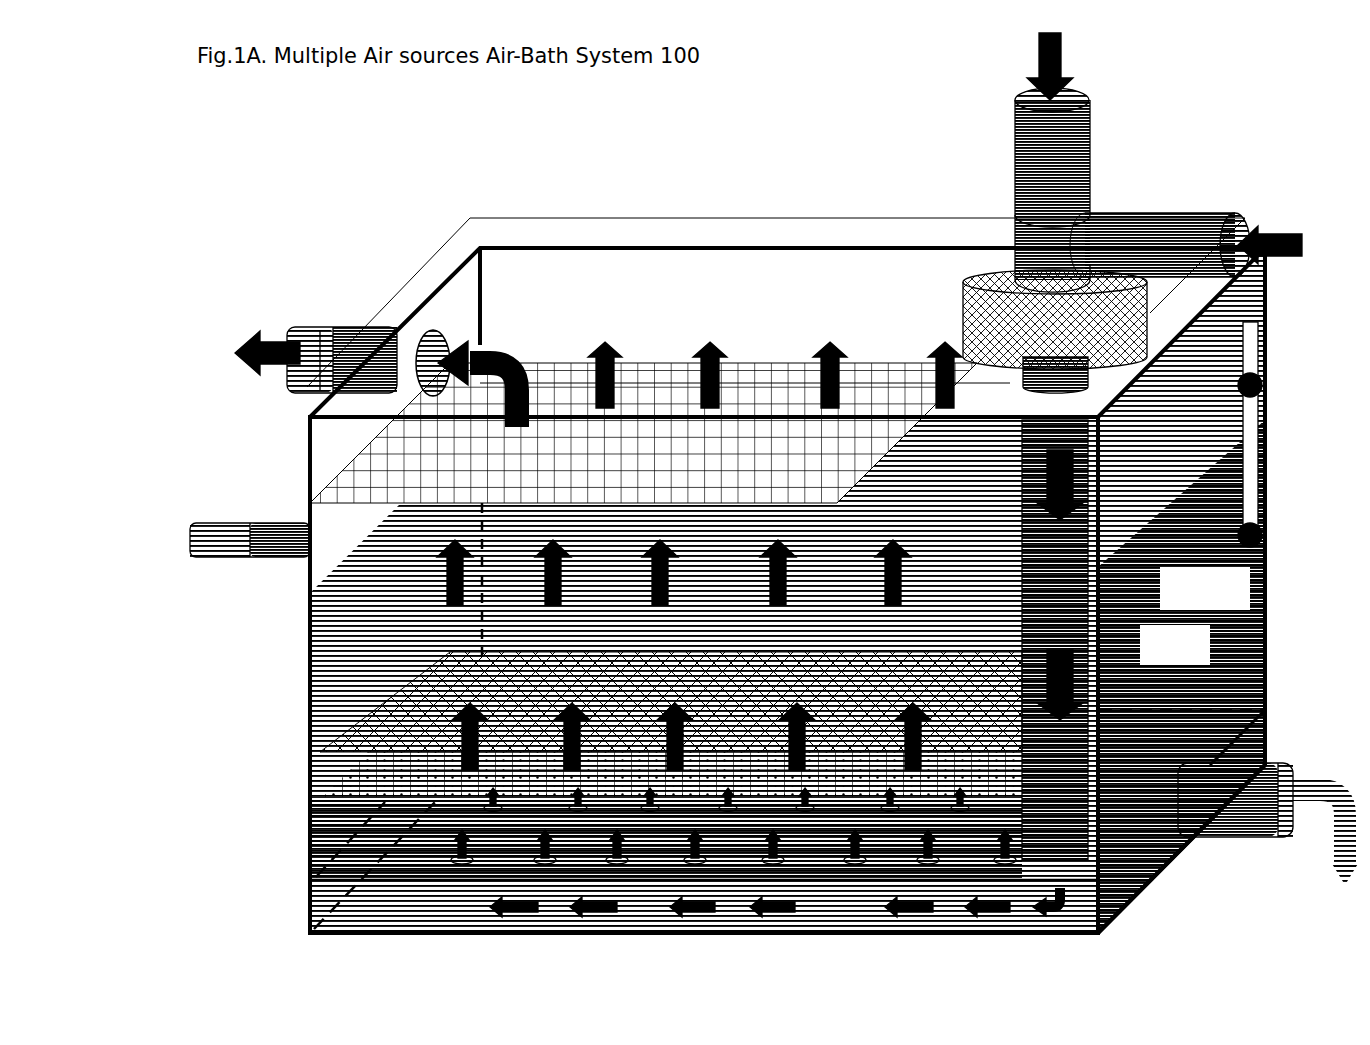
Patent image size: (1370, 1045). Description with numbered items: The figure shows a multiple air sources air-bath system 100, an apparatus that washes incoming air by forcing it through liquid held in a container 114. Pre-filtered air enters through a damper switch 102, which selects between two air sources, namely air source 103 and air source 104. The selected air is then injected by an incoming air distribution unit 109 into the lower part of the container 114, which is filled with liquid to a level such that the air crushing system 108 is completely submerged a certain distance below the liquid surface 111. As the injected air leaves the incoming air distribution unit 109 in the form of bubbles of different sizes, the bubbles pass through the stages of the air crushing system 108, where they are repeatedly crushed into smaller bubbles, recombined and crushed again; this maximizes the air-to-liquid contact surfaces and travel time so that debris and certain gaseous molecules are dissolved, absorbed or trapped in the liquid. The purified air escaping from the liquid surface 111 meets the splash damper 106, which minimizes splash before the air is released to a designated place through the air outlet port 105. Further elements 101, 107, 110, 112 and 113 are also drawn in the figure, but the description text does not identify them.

The multiple air sources air-bath system 100 is at (786, 575).
The air filter 101 is at (962, 320).
The damper switch 102 is at (1015, 240).
The air source 103 is at (1073, 73).
The air source 104 is at (1272, 212).
The air outlet port 105 is at (360, 325).
The splash damper 106 is at (370, 485).
The side air inlet pipe 107 is at (283, 560).
The air crushing system 108 is at (348, 740).
The incoming air distribution unit 109 is at (342, 898).
The sensor bar 110 is at (1258, 428).
The liquid surface 111 is at (1167, 533).
The side duct 112 is at (1085, 682).
The outlet pipe 113 is at (1288, 762).
The container 114 is at (1100, 847).